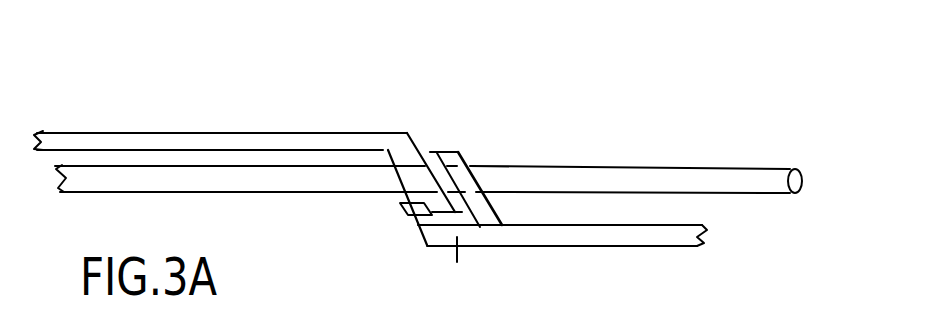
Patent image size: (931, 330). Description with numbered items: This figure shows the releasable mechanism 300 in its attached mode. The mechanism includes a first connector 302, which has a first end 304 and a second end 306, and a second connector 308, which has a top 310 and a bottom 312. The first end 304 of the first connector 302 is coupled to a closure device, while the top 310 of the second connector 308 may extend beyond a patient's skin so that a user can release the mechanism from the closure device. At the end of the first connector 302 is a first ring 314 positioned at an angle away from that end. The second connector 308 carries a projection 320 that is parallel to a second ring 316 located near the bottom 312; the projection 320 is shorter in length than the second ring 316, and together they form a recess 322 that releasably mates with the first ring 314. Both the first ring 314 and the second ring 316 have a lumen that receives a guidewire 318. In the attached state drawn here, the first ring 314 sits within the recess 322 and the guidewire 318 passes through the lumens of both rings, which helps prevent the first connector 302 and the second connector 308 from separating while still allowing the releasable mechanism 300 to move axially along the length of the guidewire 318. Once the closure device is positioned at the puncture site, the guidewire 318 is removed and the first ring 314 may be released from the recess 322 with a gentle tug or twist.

The releasable mechanism 300 is at (486, 95).
The first connector 302 is at (200, 138).
The first end 304 is at (383, 136).
The second end 306 is at (52, 138).
The second connector 308 is at (533, 237).
The top 310 is at (682, 237).
The bottom 312 is at (455, 271).
The first ring 314 is at (423, 138).
The second ring 316 is at (473, 143).
The guidewire 318 is at (748, 178).
The projection 320 is at (410, 213).
The recess 322 is at (423, 246).